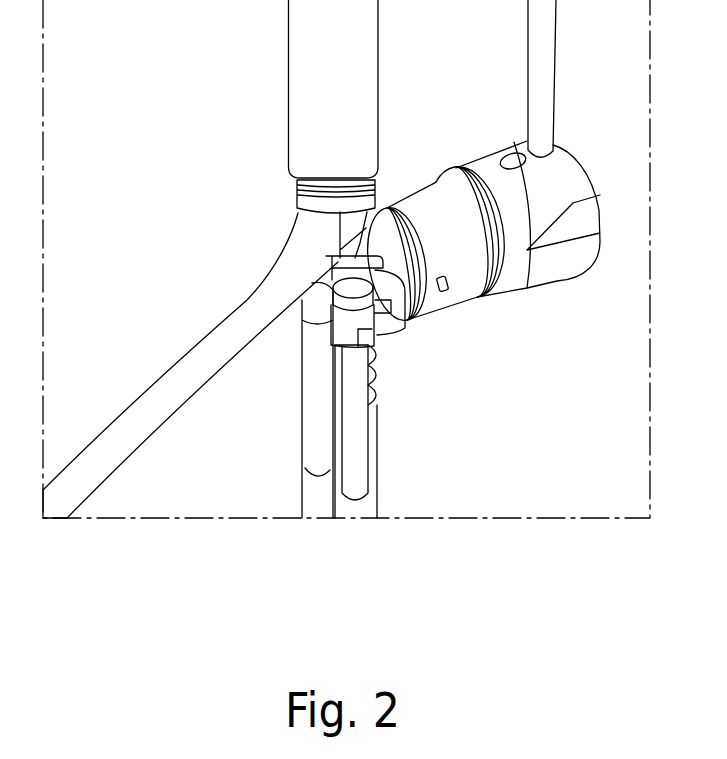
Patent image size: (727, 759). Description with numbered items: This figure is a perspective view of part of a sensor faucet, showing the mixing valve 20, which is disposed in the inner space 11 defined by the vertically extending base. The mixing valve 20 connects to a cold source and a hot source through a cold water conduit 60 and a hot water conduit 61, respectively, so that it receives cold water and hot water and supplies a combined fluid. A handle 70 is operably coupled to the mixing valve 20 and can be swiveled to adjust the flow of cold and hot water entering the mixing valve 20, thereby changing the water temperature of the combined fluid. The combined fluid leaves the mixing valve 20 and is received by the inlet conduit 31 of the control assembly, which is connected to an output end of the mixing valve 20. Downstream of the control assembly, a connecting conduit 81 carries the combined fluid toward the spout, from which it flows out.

The inner space 11 is at (393, 178).
The mixing valve 20 is at (467, 282).
The inlet conduit 31 is at (377, 367).
The cold water conduit 60 is at (316, 387).
The hot water conduit 61 is at (355, 450).
The handle 70 is at (545, 50).
The connecting conduit 81 is at (158, 397).